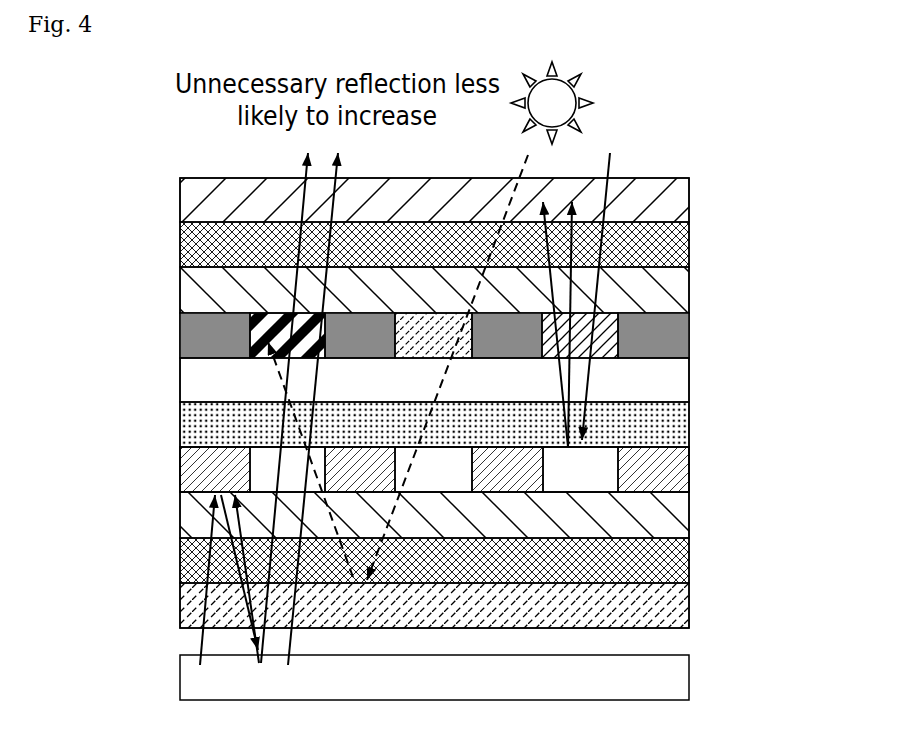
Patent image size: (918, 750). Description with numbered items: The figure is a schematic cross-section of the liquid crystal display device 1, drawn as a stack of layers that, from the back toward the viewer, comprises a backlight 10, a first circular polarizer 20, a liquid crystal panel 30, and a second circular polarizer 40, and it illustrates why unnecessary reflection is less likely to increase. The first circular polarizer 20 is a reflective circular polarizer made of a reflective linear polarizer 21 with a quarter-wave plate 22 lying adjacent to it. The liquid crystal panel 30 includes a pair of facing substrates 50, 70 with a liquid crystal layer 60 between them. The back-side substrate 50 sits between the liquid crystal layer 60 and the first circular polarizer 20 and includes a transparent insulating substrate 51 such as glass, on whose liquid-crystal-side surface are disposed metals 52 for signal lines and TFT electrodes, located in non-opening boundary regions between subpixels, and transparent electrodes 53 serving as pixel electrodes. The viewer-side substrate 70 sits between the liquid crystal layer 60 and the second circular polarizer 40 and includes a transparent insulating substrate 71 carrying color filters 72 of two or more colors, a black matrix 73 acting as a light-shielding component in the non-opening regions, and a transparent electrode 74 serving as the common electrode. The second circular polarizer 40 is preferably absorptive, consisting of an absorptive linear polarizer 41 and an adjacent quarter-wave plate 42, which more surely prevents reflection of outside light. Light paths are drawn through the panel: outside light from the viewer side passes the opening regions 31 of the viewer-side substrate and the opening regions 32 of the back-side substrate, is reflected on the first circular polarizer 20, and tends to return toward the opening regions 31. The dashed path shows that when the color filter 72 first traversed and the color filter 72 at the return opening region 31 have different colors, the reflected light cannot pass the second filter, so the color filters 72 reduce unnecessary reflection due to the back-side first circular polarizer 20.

The liquid crystal display device 1 is at (699, 150).
The backlight 10 is at (680, 680).
The first circular polarizer 20 is at (494, 583).
The reflective linear polarizer 21 is at (466, 605).
The λ/4 plate 22 is at (680, 565).
The liquid crystal panel 30 is at (465, 403).
The opening regions of the viewer-side substrate 31 is at (677, 362).
The opening regions of the back-side substrate 32 is at (650, 448).
The second circular polarizer 40 is at (494, 222).
The absorptive linear polarizer 41 is at (677, 198).
The λ/4 plate 42 is at (466, 244).
The substrate 50 is at (437, 476).
The insulating substrate 51 is at (466, 515).
The metals 52 is at (600, 462).
The transparent electrodes 53 is at (598, 473).
The liquid crystal layer 60 is at (437, 415).
The substrate 70 is at (437, 334).
The insulating substrate 71 is at (679, 296).
The color filters 72 is at (618, 345).
The black matrix 73 is at (618, 325).
The transparent electrode 74 is at (677, 386).